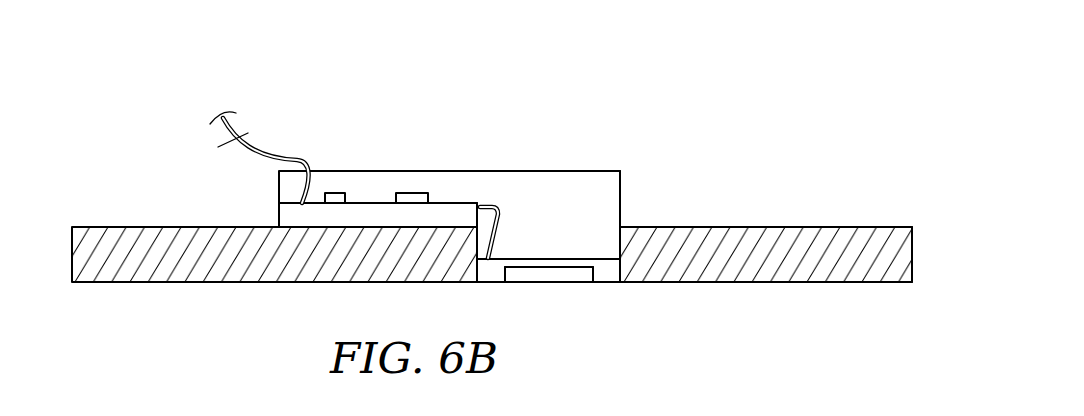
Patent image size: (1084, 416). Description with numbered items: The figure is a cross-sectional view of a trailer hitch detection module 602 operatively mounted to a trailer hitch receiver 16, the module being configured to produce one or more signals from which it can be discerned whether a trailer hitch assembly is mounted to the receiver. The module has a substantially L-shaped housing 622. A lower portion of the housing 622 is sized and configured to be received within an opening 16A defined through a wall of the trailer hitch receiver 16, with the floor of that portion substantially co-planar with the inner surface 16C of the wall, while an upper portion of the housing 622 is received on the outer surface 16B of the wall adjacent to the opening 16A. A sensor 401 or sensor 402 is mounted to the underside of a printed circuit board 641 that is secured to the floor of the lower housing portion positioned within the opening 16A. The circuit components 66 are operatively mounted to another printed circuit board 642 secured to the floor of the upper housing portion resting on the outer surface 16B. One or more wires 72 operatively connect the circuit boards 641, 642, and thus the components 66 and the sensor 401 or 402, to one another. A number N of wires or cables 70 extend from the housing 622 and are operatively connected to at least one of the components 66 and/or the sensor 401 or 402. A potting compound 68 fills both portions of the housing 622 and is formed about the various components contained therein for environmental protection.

The trailer hitch receiver 16 is at (784, 192).
The opening 16A is at (620, 245).
The outer surface 16B is at (862, 227).
The inner surface 16C is at (805, 282).
The trailer hitch detection module 602 is at (592, 150).
The potting compound 68 is at (578, 190).
The housing 622 is at (278, 208).
The printed circuit board 642 is at (438, 217).
The printed circuit board 641 is at (547, 262).
The circuit components 66 is at (408, 171).
The wires or cables 70 is at (213, 122).
The number of wires N is at (238, 126).
The wires 72 is at (499, 216).
The sensor 401 is at (548, 283).
The sensor 402 is at (549, 274).